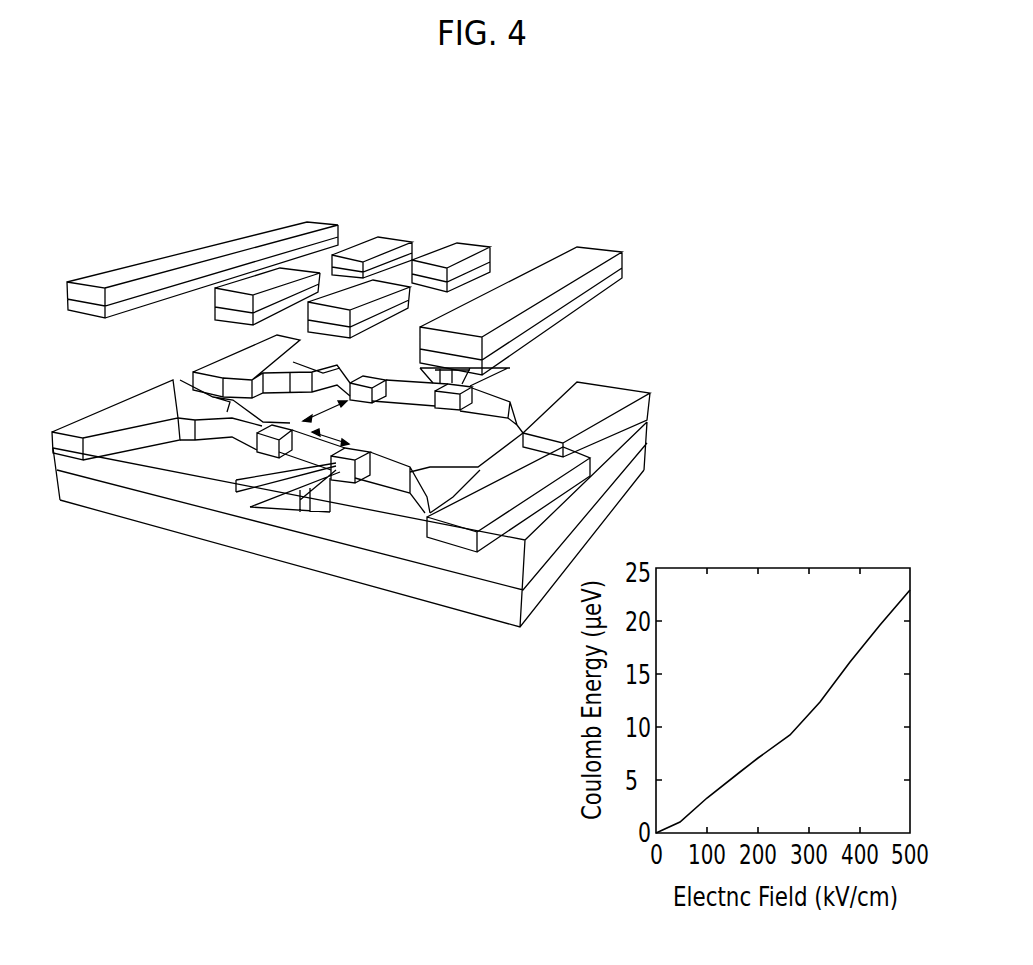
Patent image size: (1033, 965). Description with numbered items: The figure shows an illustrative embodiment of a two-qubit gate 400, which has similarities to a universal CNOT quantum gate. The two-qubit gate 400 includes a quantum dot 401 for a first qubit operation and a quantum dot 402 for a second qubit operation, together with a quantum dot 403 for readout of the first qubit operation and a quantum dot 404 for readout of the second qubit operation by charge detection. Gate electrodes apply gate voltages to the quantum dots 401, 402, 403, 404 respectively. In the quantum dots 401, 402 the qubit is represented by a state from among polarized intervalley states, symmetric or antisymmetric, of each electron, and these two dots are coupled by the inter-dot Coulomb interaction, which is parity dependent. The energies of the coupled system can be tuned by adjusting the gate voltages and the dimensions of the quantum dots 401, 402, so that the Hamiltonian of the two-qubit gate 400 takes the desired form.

The two-qubit gate 400 is at (643, 193).
The quantum dot 401 is at (255, 447).
The quantum dot 402 is at (378, 372).
The quantum dot 403 is at (350, 483).
The quantum dot 404 is at (444, 412).